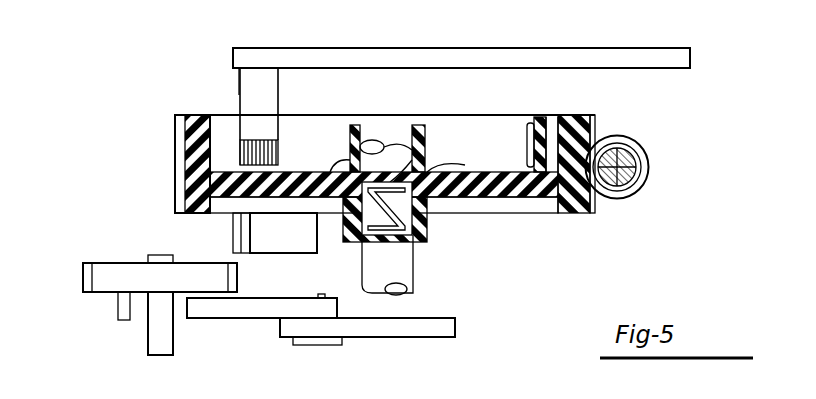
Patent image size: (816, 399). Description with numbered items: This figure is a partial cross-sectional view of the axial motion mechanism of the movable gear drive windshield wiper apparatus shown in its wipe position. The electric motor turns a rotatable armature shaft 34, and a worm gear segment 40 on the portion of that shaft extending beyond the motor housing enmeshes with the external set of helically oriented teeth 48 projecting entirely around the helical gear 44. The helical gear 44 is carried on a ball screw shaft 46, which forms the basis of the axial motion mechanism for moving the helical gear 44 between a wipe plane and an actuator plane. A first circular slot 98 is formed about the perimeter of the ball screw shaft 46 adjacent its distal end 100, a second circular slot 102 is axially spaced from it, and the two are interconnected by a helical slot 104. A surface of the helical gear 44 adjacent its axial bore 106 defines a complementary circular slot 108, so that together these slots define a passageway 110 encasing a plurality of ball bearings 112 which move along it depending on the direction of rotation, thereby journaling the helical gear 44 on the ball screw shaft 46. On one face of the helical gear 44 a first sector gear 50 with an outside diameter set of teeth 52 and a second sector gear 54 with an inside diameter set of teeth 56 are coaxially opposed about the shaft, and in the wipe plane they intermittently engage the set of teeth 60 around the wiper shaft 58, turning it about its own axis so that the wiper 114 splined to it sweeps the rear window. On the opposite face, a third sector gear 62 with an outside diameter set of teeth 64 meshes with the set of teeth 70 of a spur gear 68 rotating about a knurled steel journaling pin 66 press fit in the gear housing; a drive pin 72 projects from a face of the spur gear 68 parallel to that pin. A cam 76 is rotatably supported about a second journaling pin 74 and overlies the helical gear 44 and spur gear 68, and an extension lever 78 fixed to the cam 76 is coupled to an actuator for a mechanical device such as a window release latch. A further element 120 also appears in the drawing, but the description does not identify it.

The armature shaft 34 is at (647, 160).
The worm gear segment 40 is at (647, 173).
The helical gear 44 is at (190, 135).
The ball screw shaft 46 is at (413, 290).
The helically oriented teeth 48 is at (595, 125).
The first sector gear 50 is at (282, 142).
The outside diameter set of teeth 52 is at (274, 138).
The second sector gear 54 is at (538, 117).
The inside diameter set of teeth 56 is at (527, 123).
The wiper shaft 58 is at (239, 80).
The set of teeth 60 is at (239, 148).
The third sector gear 62 is at (298, 235).
The outside diameter set of teeth 64 is at (233, 232).
The journaling pin 66 is at (163, 343).
The spur gear 68 is at (120, 265).
The set of teeth 70 is at (83, 285).
The drive pin 72 is at (118, 307).
The second journaling pin 74 is at (318, 295).
The cam 76 is at (225, 308).
The extension lever 78 is at (407, 328).
The first circular slot 98 is at (421, 150).
The distal end 100 is at (380, 130).
The second circular slot 102 is at (417, 260).
The helical slot 104 is at (425, 217).
The axial bore 106 is at (368, 126).
The circular slot 108 is at (440, 172).
The passageway 110 is at (430, 197).
The ball bearings 112 is at (350, 157).
The wiper 114 is at (598, 56).
The tab 120 is at (305, 342).